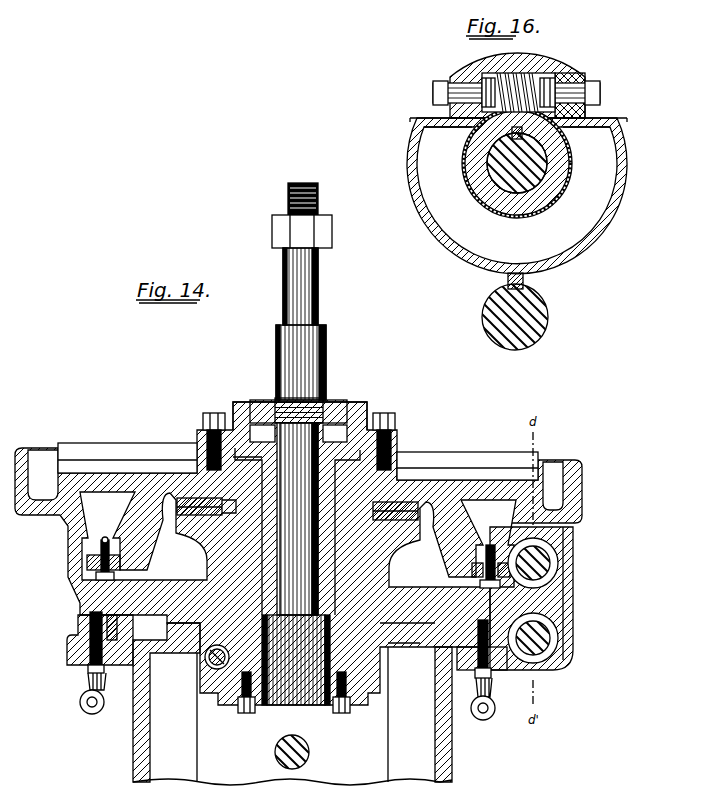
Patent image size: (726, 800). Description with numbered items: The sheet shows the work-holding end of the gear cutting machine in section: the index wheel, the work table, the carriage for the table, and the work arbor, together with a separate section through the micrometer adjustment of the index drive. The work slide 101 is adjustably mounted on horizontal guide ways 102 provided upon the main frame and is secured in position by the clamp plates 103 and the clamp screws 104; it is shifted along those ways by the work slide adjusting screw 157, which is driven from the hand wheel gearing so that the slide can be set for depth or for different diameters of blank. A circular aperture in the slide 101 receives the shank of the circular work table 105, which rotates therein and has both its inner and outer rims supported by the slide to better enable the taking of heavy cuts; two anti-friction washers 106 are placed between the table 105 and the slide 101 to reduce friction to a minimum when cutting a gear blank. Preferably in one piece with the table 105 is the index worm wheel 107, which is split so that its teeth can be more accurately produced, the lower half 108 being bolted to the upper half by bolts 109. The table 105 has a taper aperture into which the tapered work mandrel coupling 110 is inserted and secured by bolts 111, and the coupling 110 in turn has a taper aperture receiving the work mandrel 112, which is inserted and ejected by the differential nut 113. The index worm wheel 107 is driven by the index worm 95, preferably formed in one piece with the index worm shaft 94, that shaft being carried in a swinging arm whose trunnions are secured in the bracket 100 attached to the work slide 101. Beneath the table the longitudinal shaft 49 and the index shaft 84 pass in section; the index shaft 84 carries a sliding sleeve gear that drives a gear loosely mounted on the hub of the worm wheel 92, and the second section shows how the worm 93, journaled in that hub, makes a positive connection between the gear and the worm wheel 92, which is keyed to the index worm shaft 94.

In FIG. 14, the longitudinal shaft 49 is at (312, 752).
In FIG. 14, the index shaft 84 is at (550, 638).
In FIG. 16, the index shaft 84 is at (546, 305).
In FIG. 16, the worm wheel 92 is at (569, 181).
In FIG. 16, the worm 93 is at (586, 88).
In FIG. 16, the index worm shaft 94 is at (482, 195).
In FIG. 14, the index worm 95 is at (550, 548).
In FIG. 14, the bracket 100 is at (535, 670).
In FIG. 14, the work slide 101 is at (90, 600).
In FIG. 14, the horizontal guide ways 102 is at (166, 624).
In FIG. 14, the clamp plates 103 is at (74, 664).
In FIG. 14, the clamp screws 104 is at (82, 706).
In FIG. 14, the circular work table 105 is at (402, 472).
In FIG. 14, the anti-friction washers 106 is at (193, 514).
In FIG. 14, the index worm wheel 107 is at (88, 543).
In FIG. 14, the lower half 108 is at (86, 562).
In FIG. 14, the bolts 109 is at (490, 546).
In FIG. 14, the tapered work mandrel coupling 110 is at (365, 411).
In FIG. 14, the bolts 111 is at (213, 413).
In FIG. 14, the work mandrel 112 is at (323, 351).
In FIG. 14, the differential nut 113 is at (336, 401).
In FIG. 14, the work slide adjusting screw 157 is at (205, 663).